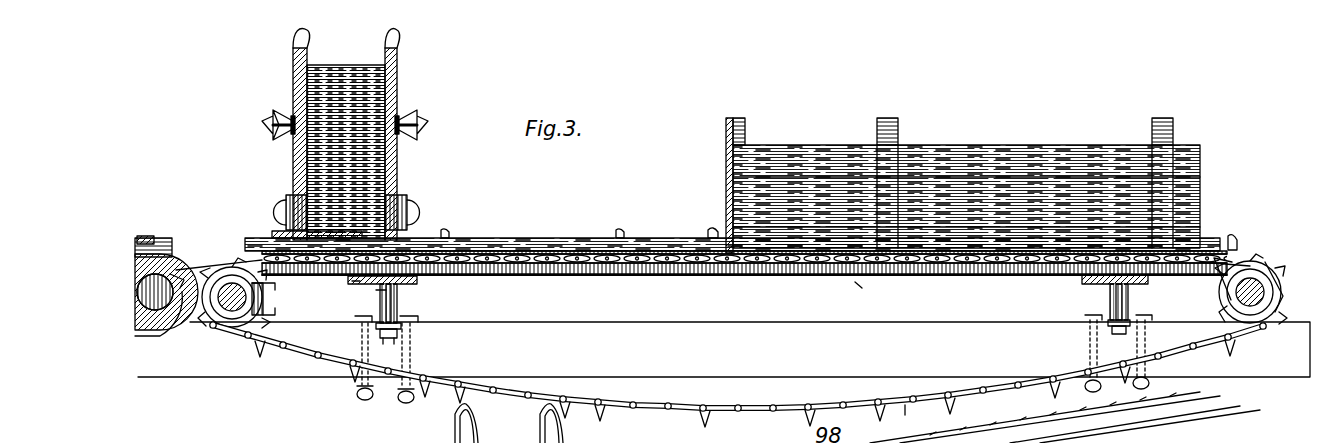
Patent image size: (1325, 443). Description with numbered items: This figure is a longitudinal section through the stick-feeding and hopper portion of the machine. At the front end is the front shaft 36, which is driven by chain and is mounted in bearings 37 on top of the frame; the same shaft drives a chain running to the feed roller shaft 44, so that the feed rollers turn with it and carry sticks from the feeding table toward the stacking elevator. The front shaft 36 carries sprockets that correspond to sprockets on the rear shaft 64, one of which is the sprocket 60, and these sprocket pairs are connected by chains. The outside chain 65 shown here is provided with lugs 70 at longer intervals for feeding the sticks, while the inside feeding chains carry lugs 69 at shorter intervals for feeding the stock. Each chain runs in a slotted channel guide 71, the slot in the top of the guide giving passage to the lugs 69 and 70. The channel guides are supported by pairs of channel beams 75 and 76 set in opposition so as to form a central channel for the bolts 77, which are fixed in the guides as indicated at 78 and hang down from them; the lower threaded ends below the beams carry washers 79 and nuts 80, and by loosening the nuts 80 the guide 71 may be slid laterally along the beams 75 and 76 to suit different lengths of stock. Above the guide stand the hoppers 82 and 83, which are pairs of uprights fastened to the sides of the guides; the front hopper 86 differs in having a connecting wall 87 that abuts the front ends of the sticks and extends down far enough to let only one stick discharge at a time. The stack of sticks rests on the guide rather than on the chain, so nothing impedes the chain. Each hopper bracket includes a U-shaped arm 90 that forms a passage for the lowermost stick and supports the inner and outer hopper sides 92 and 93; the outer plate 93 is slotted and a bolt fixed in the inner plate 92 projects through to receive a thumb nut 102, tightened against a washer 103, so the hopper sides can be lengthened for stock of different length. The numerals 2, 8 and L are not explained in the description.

The frame 2 is at (676, 332).
The hopper body 8 is at (970, 165).
The front shaft 36 is at (230, 280).
The bearings 37 is at (265, 310).
The feed roller shaft 44 is at (182, 360).
The sprocket 60 is at (1270, 298).
The rear shaft 64 is at (1261, 280).
The chain 65 is at (655, 400).
The lugs 69 is at (447, 238).
The lugs 70 is at (185, 268).
The channel guide 71 is at (553, 287).
The channel beam 75 is at (400, 312).
The channel beam 76 is at (1135, 306).
The bolts 77 is at (378, 296).
The fixing of bolts in guides 78 is at (356, 283).
The washers 79 is at (376, 326).
The nuts 80 is at (384, 342).
The hopper 82 is at (893, 120).
The hopper 83 is at (1164, 120).
The front hopper 86 is at (742, 116).
The connecting wall 87 is at (720, 155).
The U-shaped arm 90 is at (288, 207).
The inner hopper side 92 is at (310, 46).
The outer hopper side 93 is at (395, 46).
The thumb nut 102 is at (419, 116).
The washers 103 is at (400, 114).
The coil of wire L is at (296, 75).